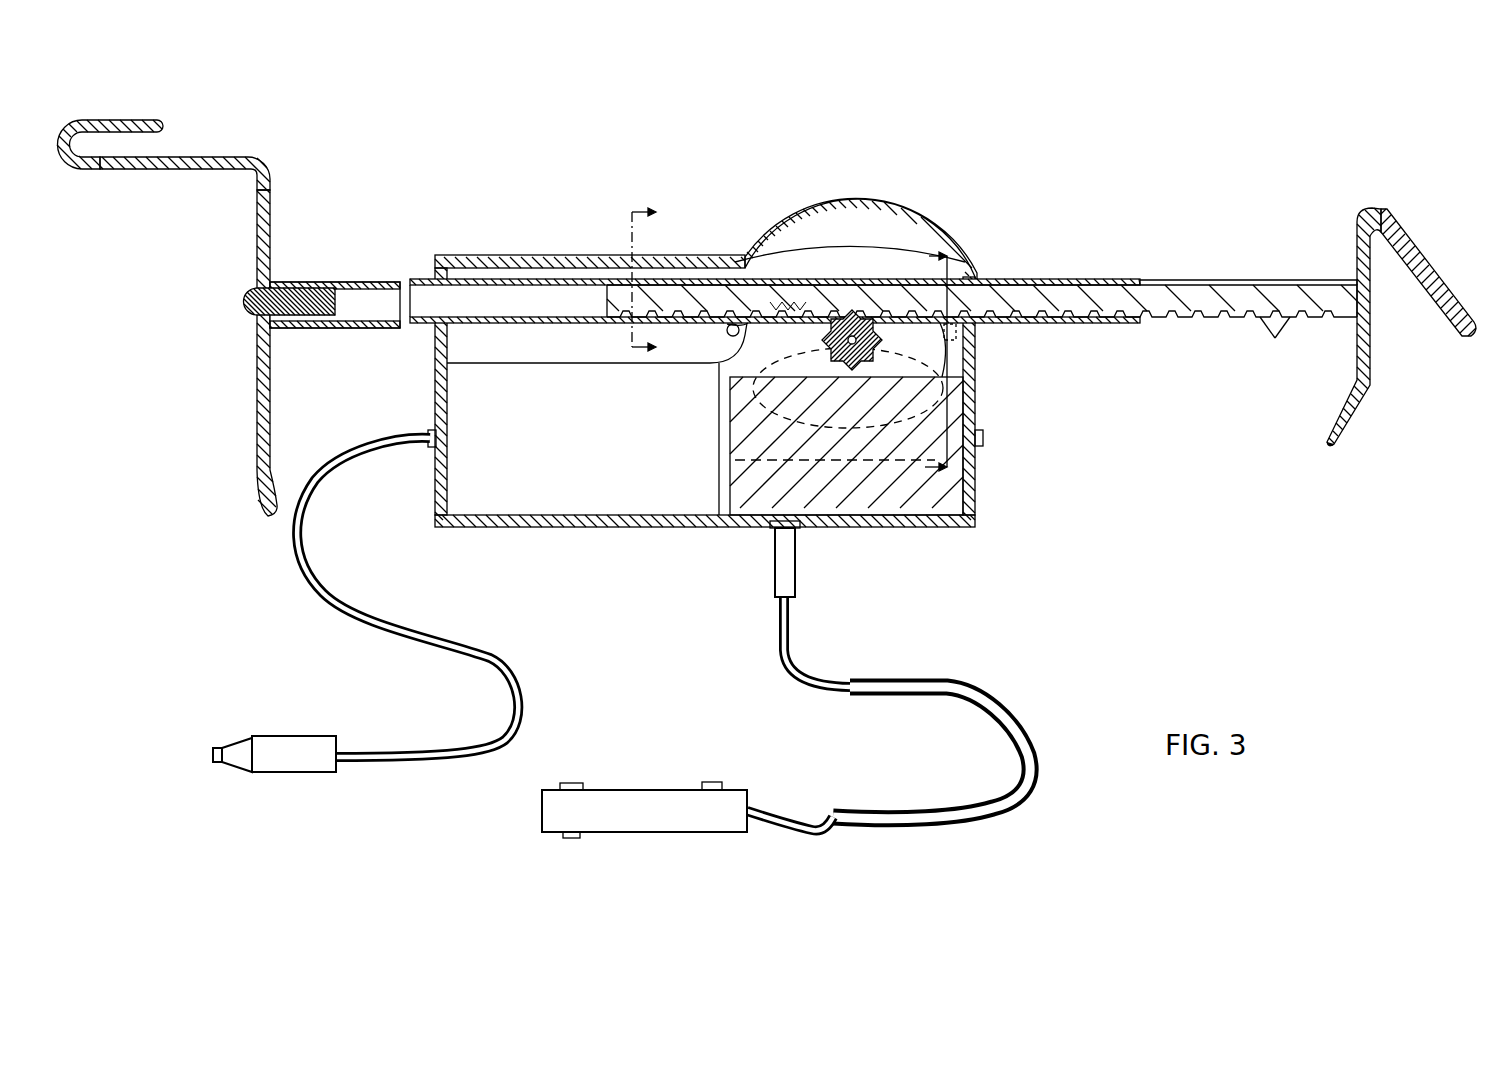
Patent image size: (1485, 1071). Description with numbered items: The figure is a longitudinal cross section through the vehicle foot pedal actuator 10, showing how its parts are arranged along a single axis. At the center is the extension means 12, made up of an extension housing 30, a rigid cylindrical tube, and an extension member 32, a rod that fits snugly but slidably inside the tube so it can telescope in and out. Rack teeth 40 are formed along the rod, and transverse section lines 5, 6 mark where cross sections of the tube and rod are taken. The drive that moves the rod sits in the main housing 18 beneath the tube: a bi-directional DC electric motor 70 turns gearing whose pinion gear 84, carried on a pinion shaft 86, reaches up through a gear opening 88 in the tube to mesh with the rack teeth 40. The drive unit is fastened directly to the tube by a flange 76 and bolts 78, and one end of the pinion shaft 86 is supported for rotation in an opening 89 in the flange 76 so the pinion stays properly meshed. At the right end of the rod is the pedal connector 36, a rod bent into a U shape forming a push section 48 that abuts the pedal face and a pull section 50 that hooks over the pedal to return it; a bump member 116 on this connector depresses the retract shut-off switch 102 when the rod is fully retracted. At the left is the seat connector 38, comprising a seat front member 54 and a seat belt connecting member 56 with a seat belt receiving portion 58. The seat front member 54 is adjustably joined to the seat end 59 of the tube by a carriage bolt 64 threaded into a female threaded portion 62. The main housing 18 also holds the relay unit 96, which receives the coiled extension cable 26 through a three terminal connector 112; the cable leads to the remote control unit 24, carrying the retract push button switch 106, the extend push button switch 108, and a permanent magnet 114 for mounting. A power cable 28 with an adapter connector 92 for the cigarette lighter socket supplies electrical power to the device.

The vehicle foot pedal actuator 10 is at (1133, 619).
The extension means 12 is at (1145, 355).
The main housing 18 is at (470, 254).
The remote control unit 24 is at (636, 790).
The extension cable 26 is at (967, 686).
The power cable 28 is at (338, 602).
The extension housing 30 is at (1112, 278).
The extension member 32 is at (1243, 284).
The pedal connector 36 is at (1328, 183).
The seat connector 38 is at (294, 171).
The rack teeth 40 is at (1275, 338).
The push section 48 is at (1357, 348).
The pull section 50 is at (1428, 286).
The seat front member 54 is at (257, 381).
The seat belt connecting member 56 is at (202, 157).
The seat belt receiving portion 58 is at (110, 121).
The seat end 59 is at (294, 230).
The female threaded portion 62 is at (287, 322).
The carriage bolt 64 is at (244, 304).
The bi-directional DC electric motor 70 is at (532, 500).
The flange 76 is at (833, 320).
The bolts 78 is at (733, 322).
The pinion gear 84 is at (843, 326).
The pinion shaft 86 is at (845, 330).
The gear opening 88 is at (803, 317).
The opening 89 is at (852, 335).
The adapter connector 92 is at (290, 748).
The relay unit 96 is at (752, 500).
The retract shut-off switch 102 is at (984, 441).
The retract push button switch 106 is at (713, 782).
The extend push button switch 108 is at (572, 782).
The three terminal connector 112 is at (793, 573).
The permanent magnet 114 is at (572, 838).
The bump member 116 is at (1333, 444).
The section line 5- 5 is at (925, 361).
The section line 6- 6 is at (654, 279).